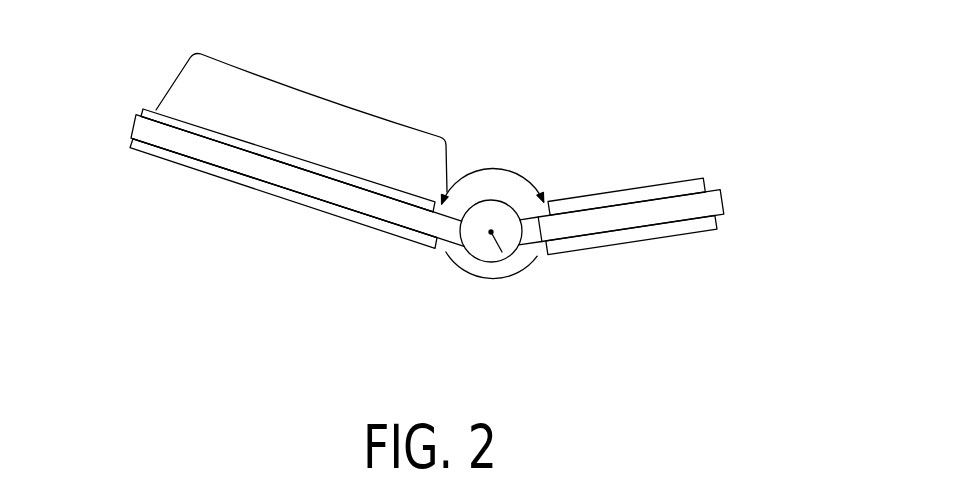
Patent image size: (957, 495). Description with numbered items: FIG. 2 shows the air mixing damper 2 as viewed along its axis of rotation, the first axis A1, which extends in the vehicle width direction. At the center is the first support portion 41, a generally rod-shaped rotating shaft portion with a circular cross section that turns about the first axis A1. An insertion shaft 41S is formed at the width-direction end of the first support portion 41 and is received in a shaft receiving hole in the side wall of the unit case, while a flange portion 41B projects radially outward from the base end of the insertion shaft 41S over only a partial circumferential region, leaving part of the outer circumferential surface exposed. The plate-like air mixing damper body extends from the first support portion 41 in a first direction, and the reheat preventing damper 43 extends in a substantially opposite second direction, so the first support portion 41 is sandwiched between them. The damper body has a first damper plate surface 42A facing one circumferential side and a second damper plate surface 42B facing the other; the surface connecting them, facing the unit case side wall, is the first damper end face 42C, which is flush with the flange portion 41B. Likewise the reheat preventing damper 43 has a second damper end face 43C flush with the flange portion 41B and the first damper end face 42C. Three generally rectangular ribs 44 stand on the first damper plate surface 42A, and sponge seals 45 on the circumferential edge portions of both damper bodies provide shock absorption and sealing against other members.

The display device 2 is at (440, 195).
The first support portion 41 is at (494, 269).
The insertion shaft 41S is at (475, 245).
The flange portion 41B is at (482, 268).
The first axis A1 is at (504, 262).
The first damper plate surface 42A is at (237, 147).
The second damper plate surface 42B is at (237, 177).
The first damper end face 42C is at (318, 188).
The reheat preventing damper 43 is at (679, 251).
The second damper end face 43C is at (627, 218).
The rib 44 is at (322, 105).
The sponge seal 45 is at (151, 108).